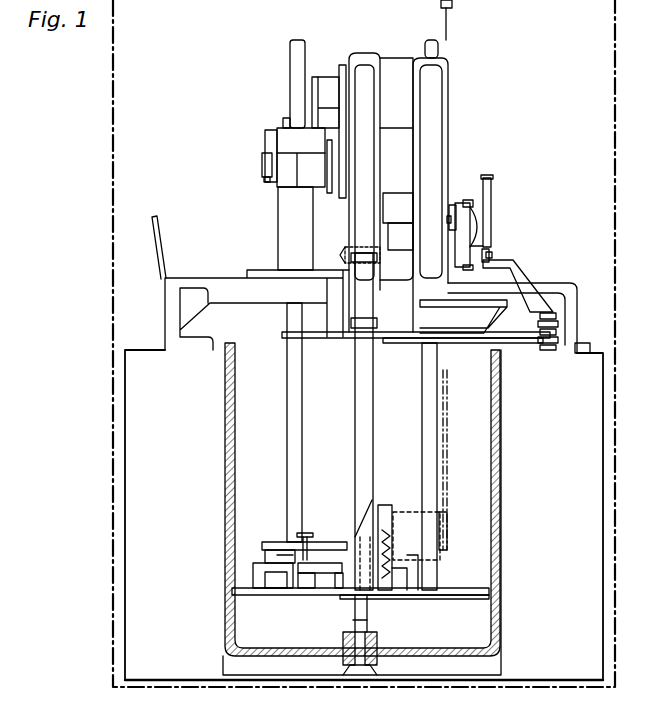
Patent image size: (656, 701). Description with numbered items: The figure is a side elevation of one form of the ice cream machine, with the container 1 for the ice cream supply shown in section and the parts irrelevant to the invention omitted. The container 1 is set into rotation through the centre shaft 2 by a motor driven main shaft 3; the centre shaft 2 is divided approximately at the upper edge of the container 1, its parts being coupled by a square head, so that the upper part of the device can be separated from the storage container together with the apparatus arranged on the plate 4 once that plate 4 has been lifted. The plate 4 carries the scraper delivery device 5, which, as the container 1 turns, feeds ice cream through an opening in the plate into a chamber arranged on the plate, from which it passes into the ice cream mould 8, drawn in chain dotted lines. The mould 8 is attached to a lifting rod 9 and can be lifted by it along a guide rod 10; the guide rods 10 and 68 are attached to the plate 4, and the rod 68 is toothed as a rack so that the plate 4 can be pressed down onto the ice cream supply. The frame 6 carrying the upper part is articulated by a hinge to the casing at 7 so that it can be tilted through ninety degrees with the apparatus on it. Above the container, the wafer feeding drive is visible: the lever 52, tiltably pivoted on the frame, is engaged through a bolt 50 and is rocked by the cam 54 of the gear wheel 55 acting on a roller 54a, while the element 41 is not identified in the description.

The container 1 is at (494, 461).
The centre shaft 2 is at (353, 422).
The main shaft 3 is at (403, 243).
The plate 4 is at (449, 588).
The scraper delivery device 5 is at (352, 603).
The frame 6 is at (573, 326).
The hinge 7 is at (578, 349).
The ice cream mould 8 is at (398, 592).
The lifting rod 9 is at (448, 33).
The guide rod 10 is at (430, 423).
The bracket 41 is at (457, 210).
The bolt 50 is at (553, 313).
The lever 52 is at (521, 278).
The cam 54 is at (476, 243).
The roller 54a is at (488, 257).
The gear wheel 55 is at (468, 227).
The guide rod 68 is at (295, 418).